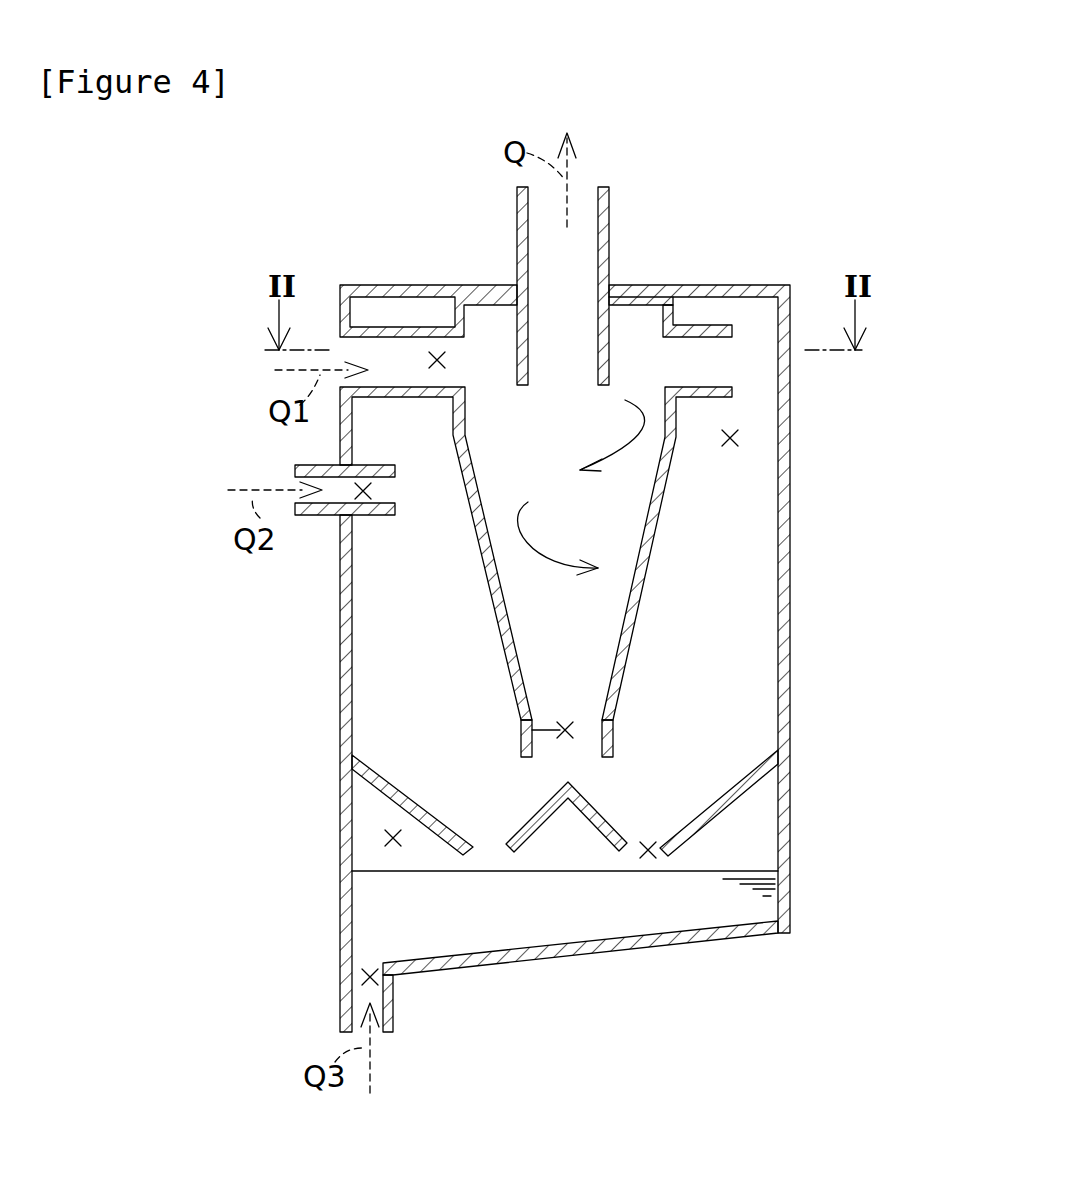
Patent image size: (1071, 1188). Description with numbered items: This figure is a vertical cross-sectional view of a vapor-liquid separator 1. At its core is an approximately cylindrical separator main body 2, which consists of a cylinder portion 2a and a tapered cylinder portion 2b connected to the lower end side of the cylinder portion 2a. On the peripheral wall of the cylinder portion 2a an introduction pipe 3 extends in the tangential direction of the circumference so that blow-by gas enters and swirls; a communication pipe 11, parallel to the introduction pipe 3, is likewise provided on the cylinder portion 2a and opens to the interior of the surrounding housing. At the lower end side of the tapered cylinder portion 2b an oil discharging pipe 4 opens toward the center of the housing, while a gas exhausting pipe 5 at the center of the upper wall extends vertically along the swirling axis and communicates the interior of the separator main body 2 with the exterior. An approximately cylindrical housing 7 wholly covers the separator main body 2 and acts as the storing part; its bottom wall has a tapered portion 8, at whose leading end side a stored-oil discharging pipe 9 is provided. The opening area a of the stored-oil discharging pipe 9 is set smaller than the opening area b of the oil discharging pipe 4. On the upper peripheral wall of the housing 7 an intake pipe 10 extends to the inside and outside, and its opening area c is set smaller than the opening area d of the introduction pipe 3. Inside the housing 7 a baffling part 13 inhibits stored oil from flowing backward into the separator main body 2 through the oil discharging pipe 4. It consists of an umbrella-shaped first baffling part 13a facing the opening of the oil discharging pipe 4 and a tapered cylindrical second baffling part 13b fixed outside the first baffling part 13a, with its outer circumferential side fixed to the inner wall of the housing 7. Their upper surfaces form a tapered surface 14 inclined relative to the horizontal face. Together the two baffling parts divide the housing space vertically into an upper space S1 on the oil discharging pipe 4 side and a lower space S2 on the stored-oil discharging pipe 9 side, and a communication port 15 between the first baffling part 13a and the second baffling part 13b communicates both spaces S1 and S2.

The vapor-liquid separator 1 is at (584, 631).
The separator main body 2 is at (631, 489).
The cylinder portion 2a is at (673, 309).
The tapered cylinder portion 2b is at (638, 610).
The introduction pipe 3 is at (385, 325).
The oil discharging pipe 4 is at (613, 718).
The gas exhausting pipe 5 is at (610, 223).
The housing 7 is at (793, 583).
The tapered portion 8 is at (543, 958).
The stored-oil discharging pipe 9 is at (395, 995).
The intake pipe 10 is at (313, 465).
The communication pipe 11 is at (712, 323).
The baffling part 13 is at (704, 770).
The first baffling part 13a is at (600, 812).
The second baffling part 13b is at (728, 805).
The tapered surface 14 is at (527, 826).
The communication port 15 is at (645, 857).
The opening area of the stored-oil discharging pipe a is at (362, 978).
The opening area of the oil discharging pipe b is at (522, 730).
The opening area of the intake pipe c is at (355, 495).
The opening area of the introduction pipe d is at (437, 360).
The space on the oil discharging pipe side S1 is at (738, 440).
The space on the stored-oil discharging pipe side S2 is at (385, 838).